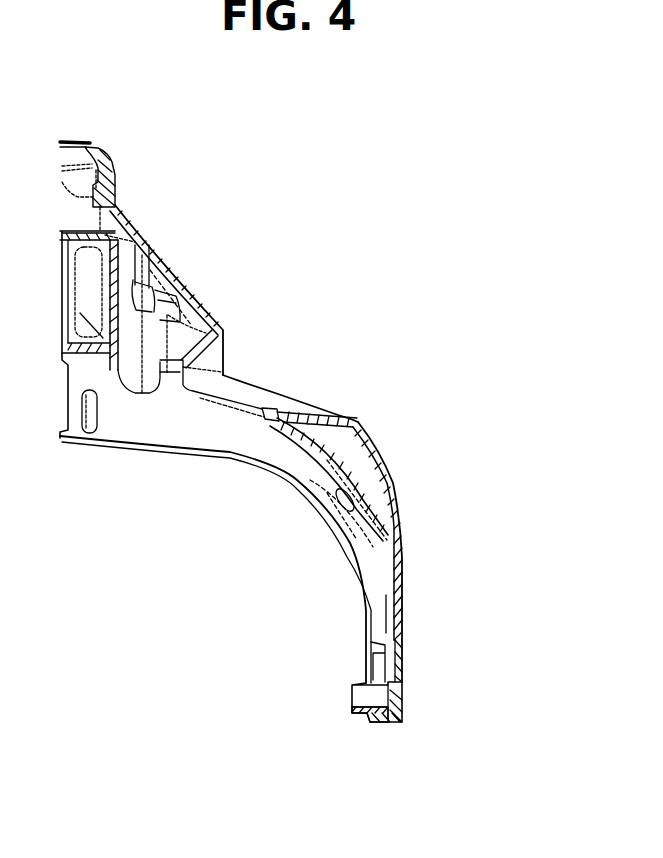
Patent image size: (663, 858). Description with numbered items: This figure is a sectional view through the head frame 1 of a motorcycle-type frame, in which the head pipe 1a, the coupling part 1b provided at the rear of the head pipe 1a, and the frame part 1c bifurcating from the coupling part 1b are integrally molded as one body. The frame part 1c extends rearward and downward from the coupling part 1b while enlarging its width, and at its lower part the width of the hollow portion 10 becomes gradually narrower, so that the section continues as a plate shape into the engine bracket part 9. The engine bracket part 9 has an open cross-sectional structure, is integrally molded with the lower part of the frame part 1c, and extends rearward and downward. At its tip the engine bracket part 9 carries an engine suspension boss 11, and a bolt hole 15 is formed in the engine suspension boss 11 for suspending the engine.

The head frame 1 is at (182, 282).
The head pipe 1a is at (106, 148).
The coupling part 1b is at (117, 208).
The frame part 1c is at (258, 382).
The engine bracket part 9 is at (404, 610).
The hollow portion 10 is at (400, 477).
The engine suspension boss 11 is at (351, 686).
The bolt hole 15 is at (351, 704).